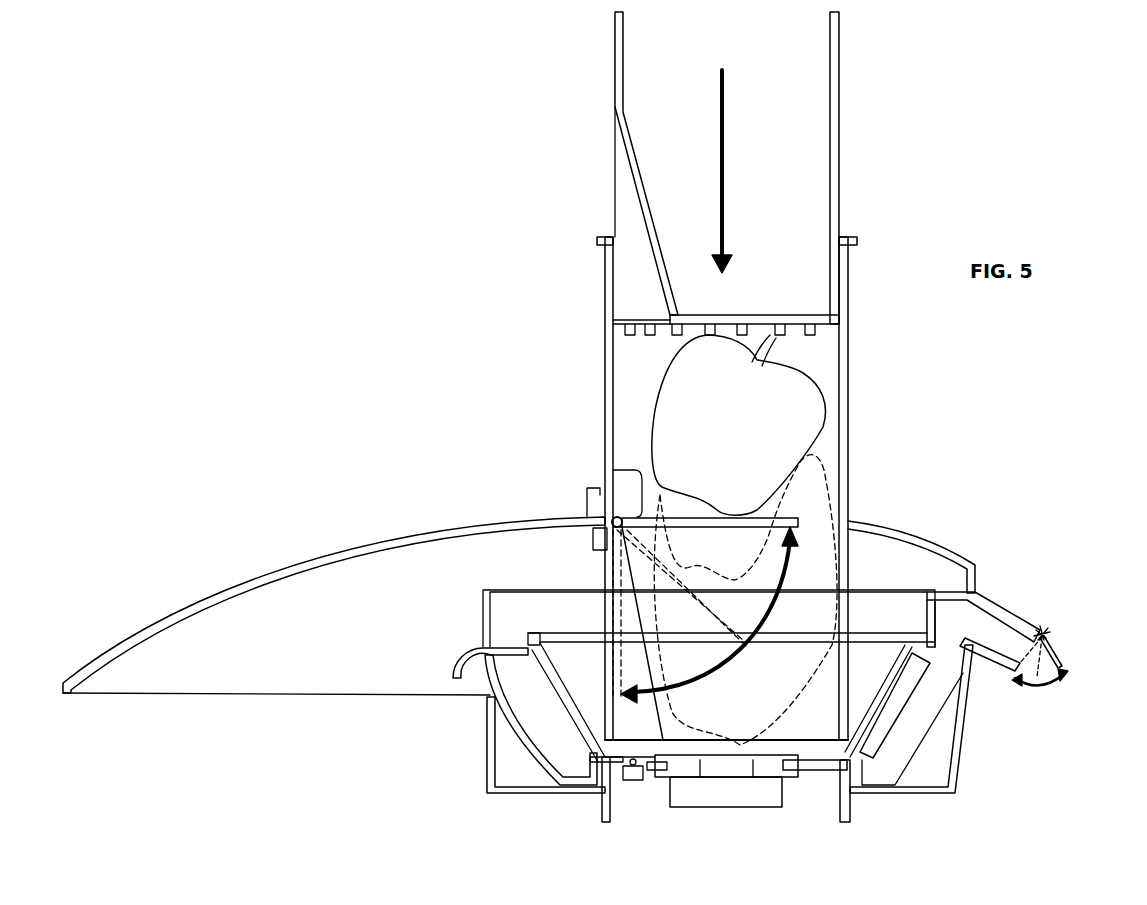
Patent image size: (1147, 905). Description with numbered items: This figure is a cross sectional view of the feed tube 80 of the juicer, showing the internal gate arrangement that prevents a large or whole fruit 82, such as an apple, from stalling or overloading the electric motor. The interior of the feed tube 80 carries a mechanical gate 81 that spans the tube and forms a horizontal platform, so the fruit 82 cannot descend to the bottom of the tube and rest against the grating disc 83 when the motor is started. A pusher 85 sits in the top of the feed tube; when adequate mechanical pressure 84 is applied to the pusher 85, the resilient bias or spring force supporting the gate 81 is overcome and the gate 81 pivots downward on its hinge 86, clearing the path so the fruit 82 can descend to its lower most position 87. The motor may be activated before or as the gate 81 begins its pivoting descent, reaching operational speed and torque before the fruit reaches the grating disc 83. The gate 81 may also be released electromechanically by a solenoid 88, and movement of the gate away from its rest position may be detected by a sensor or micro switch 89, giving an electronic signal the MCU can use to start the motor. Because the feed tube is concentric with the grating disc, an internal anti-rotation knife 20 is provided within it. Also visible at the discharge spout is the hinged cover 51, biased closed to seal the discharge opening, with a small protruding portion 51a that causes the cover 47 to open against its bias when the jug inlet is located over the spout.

The internal anti-rotation knife 20 is at (630, 715).
The cover 47 is at (903, 702).
The hinged cover 51 is at (1052, 648).
The protruding portion 51a is at (1048, 633).
The feed tube 80 is at (848, 367).
The mechanical gate 81 is at (600, 473).
The fruit or vegetable 82 is at (807, 417).
The grating disc 83 is at (818, 748).
The mechanical pressure 84 is at (725, 172).
The pusher 85 is at (838, 100).
The hinge 86 is at (612, 518).
The lower most position 87 is at (797, 630).
The solenoid 88 is at (595, 538).
The sensor or micro switch 89 is at (587, 485).